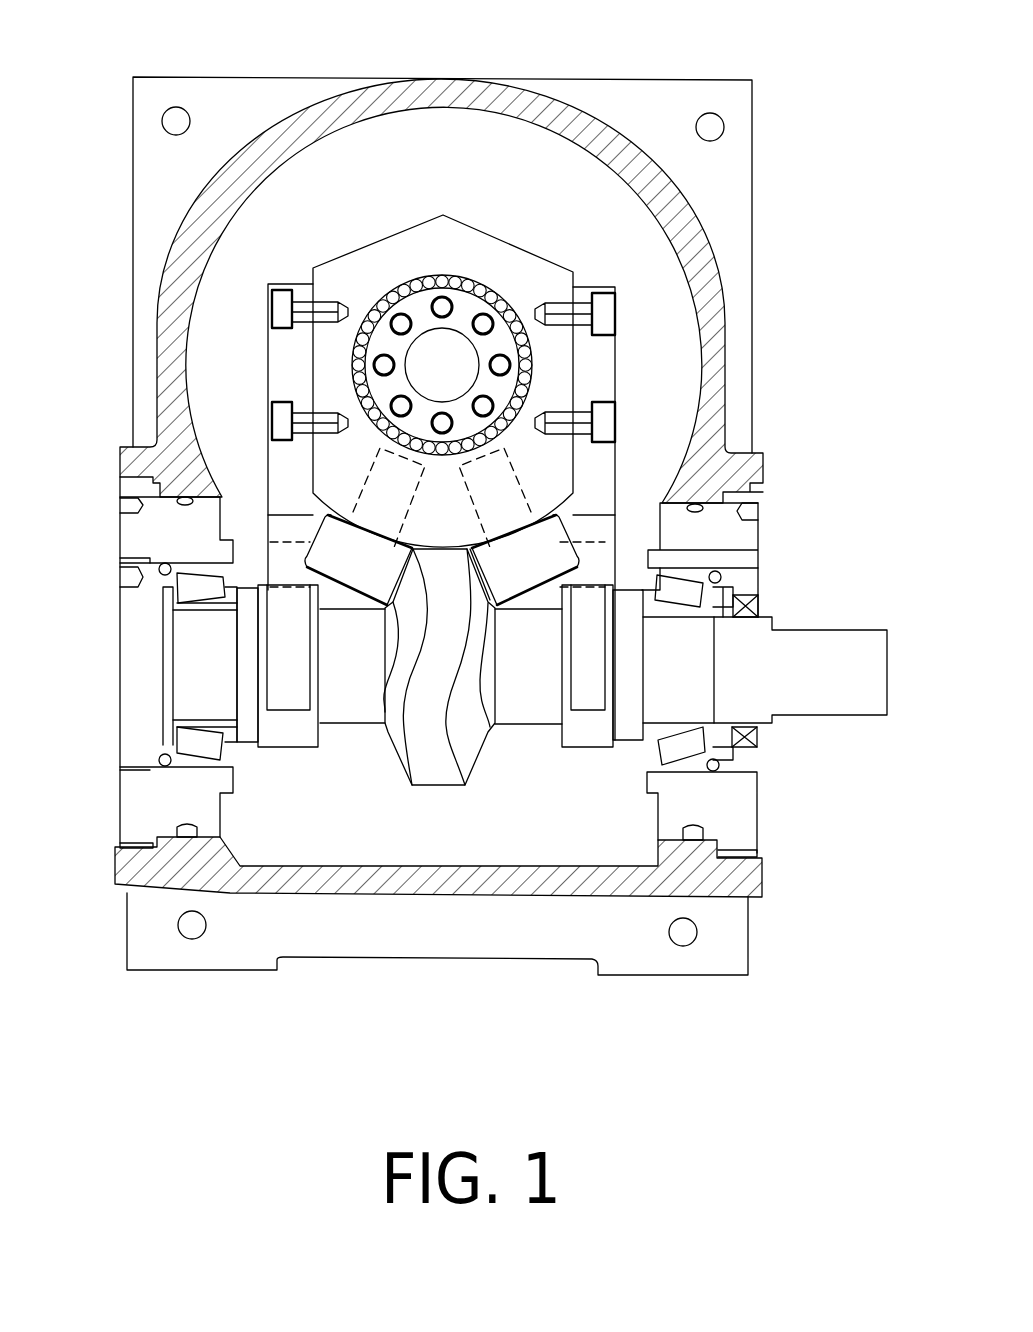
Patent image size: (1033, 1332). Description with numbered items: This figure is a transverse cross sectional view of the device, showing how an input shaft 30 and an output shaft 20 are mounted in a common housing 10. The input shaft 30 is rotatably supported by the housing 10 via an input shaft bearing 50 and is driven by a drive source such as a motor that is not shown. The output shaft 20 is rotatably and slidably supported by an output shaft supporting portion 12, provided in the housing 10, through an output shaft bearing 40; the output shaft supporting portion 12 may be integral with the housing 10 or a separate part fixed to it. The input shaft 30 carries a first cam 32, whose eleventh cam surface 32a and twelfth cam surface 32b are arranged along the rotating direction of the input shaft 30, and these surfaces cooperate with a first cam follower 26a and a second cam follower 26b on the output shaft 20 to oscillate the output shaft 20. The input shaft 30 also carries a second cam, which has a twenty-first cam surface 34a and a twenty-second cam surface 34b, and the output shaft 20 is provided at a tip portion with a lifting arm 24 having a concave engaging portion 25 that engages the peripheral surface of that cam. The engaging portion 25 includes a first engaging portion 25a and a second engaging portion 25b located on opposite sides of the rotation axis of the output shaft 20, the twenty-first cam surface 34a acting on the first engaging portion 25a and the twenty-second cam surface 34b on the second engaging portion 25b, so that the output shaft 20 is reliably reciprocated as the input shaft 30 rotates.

The housing 10 is at (160, 870).
The output shaft supporting portion 12 is at (440, 352).
The output shaft 20 is at (345, 278).
The lifting arm 24 is at (290, 355).
The engaging portion 25 is at (598, 565).
The first engaging portion 25a is at (612, 657).
The second engaging portion 25b is at (285, 650).
The first cam follower 26a is at (555, 553).
The second cam follower 26b is at (335, 540).
The input shaft 30 is at (830, 705).
The first cam 32 is at (440, 797).
The eleventh cam surface 32a is at (473, 742).
The twelfth cam surface 32b is at (395, 732).
The twenty-first cam surface 34a is at (298, 738).
The twenty-second cam surface 34b is at (605, 737).
The output shaft bearing 40 is at (478, 282).
The input shaft bearing 50 is at (687, 767).